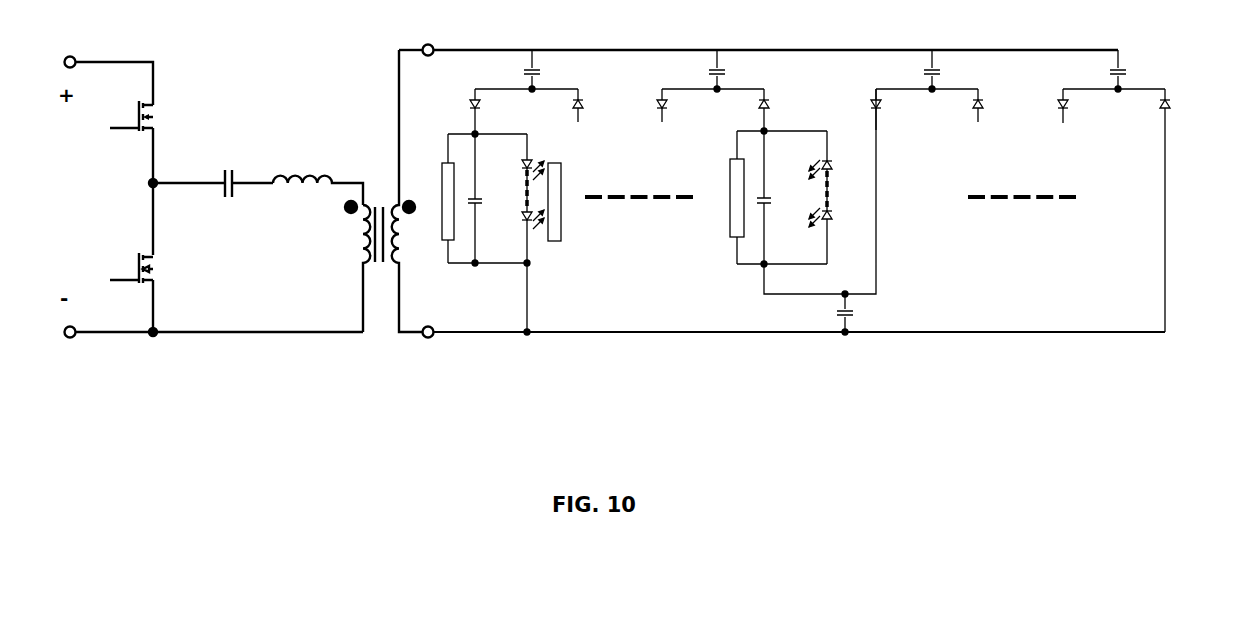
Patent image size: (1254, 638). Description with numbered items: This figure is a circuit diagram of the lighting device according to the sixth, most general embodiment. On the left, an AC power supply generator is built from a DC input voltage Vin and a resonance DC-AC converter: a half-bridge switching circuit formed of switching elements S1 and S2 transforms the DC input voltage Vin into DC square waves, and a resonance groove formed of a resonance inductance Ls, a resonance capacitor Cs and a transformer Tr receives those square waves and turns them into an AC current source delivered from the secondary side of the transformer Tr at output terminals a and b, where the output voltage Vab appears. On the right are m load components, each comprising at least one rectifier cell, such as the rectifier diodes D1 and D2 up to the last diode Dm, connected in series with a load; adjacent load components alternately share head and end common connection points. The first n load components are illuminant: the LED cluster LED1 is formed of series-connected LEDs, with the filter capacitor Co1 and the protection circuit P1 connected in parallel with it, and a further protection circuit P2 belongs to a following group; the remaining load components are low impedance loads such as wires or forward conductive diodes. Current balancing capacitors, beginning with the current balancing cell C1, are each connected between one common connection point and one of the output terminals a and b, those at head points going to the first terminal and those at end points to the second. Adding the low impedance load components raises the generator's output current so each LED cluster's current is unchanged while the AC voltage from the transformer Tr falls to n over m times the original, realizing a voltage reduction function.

The DC input voltage Vin is at (63, 194).
The switching element S1 is at (145, 116).
The switching element S2 is at (145, 268).
The resonance capacitor Cs is at (213, 174).
The resonance inductance Ls is at (318, 178).
The transformer Tr is at (384, 191).
The first output terminal a is at (771, 44).
The second output terminal b is at (794, 325).
The current balancing cell C1 is at (526, 71).
The rectifier cell D1 is at (492, 111).
The rectifier cell D2 is at (589, 105).
The filter circuit Co1 is at (488, 198).
The LED group LED1 is at (515, 198).
The protection circuit P1 is at (442, 200).
The protection circuit P2 is at (548, 227).
The rectifier cell Dm is at (1178, 210).